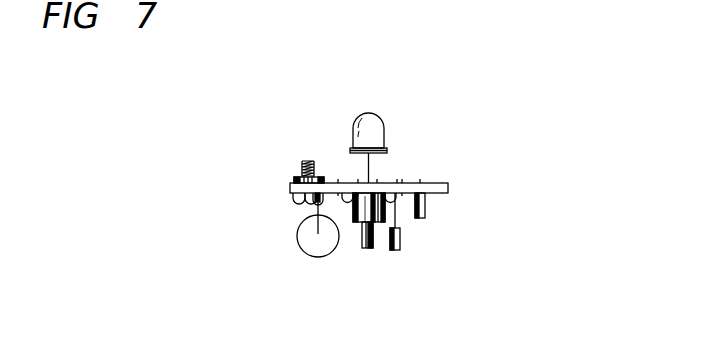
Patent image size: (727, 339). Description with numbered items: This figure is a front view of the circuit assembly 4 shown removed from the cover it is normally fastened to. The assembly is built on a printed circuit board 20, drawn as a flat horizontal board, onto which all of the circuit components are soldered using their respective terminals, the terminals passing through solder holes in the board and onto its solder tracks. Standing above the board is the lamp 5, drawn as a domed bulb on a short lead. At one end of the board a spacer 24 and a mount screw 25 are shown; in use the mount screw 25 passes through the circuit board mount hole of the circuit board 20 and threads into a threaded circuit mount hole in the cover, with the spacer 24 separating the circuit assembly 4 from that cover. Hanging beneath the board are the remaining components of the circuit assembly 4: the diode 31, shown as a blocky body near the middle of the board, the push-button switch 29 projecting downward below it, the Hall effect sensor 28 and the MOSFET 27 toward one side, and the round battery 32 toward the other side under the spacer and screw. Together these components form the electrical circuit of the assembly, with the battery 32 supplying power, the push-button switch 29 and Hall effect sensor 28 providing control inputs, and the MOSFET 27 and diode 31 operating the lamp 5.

The circuit assembly 4 is at (543, 106).
The lamp 5 is at (377, 141).
The printed circuit board 20 is at (447, 185).
The spacer 24 is at (297, 177).
The mount screw 25 is at (297, 200).
The MOSFET 27 is at (425, 215).
The Hall effect sensor 28 is at (399, 245).
The push-button switch 29 is at (365, 215).
The diode 31 is at (352, 203).
The battery 32 is at (307, 242).